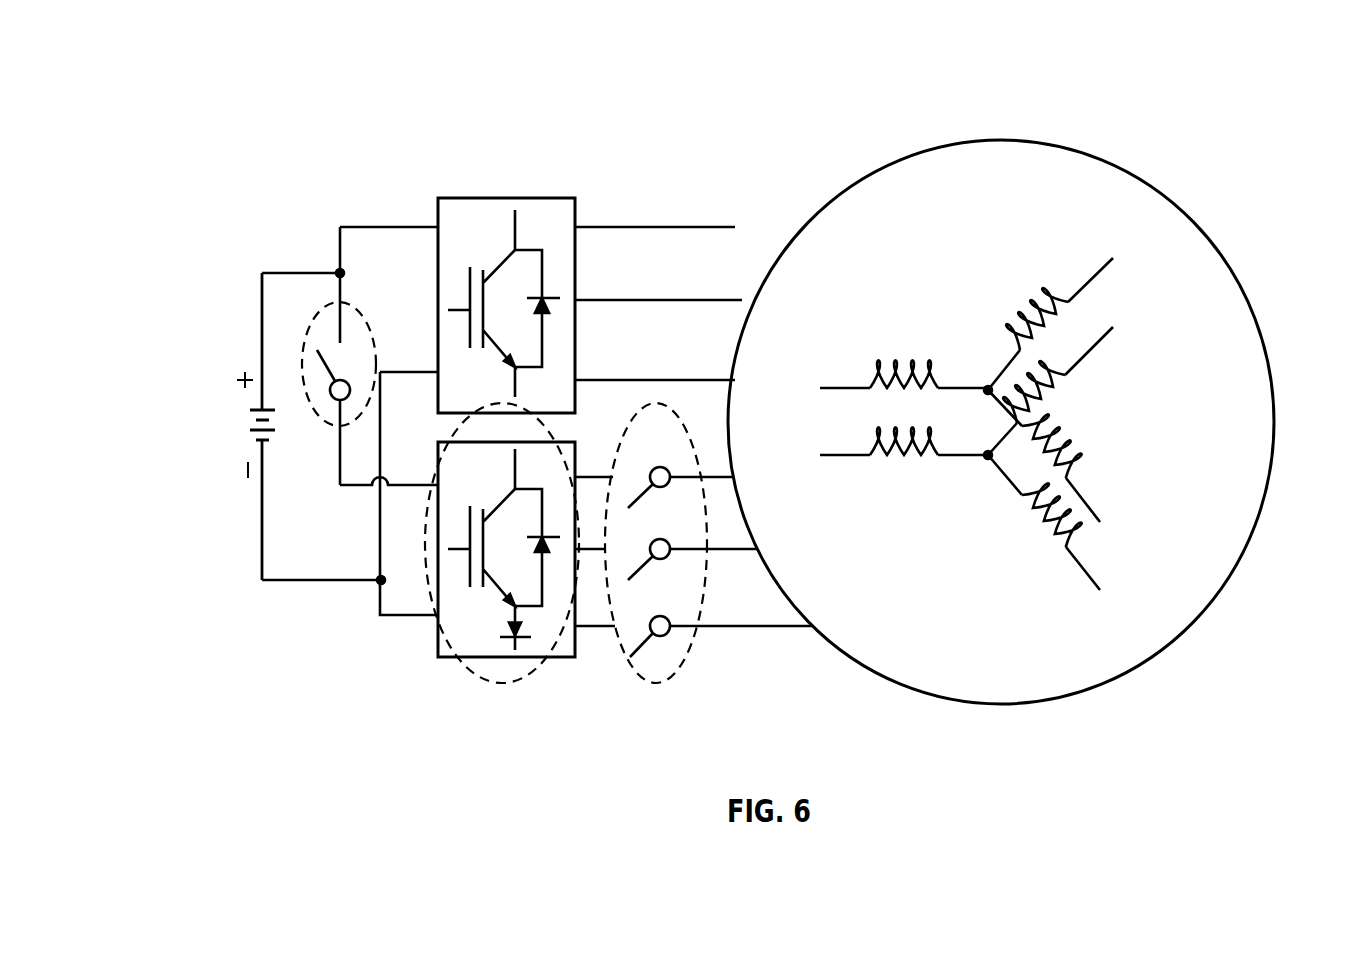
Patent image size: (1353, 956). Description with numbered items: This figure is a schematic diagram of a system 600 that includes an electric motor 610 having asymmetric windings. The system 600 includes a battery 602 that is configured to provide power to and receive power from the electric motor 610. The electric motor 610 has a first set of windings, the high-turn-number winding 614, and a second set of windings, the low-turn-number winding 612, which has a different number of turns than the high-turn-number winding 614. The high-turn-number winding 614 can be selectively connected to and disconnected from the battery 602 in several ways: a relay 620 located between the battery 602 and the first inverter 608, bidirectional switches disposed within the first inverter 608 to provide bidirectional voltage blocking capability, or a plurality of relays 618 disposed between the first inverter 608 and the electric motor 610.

The system 600 is at (222, 88).
The battery 602 is at (238, 425).
The first inverter 608 is at (493, 683).
The electric motor 610 is at (890, 162).
The low-turn-number winding 612 is at (1093, 280).
The high-turn-number winding 614 is at (1093, 347).
The relays 618 is at (655, 683).
The relay 620 is at (310, 325).